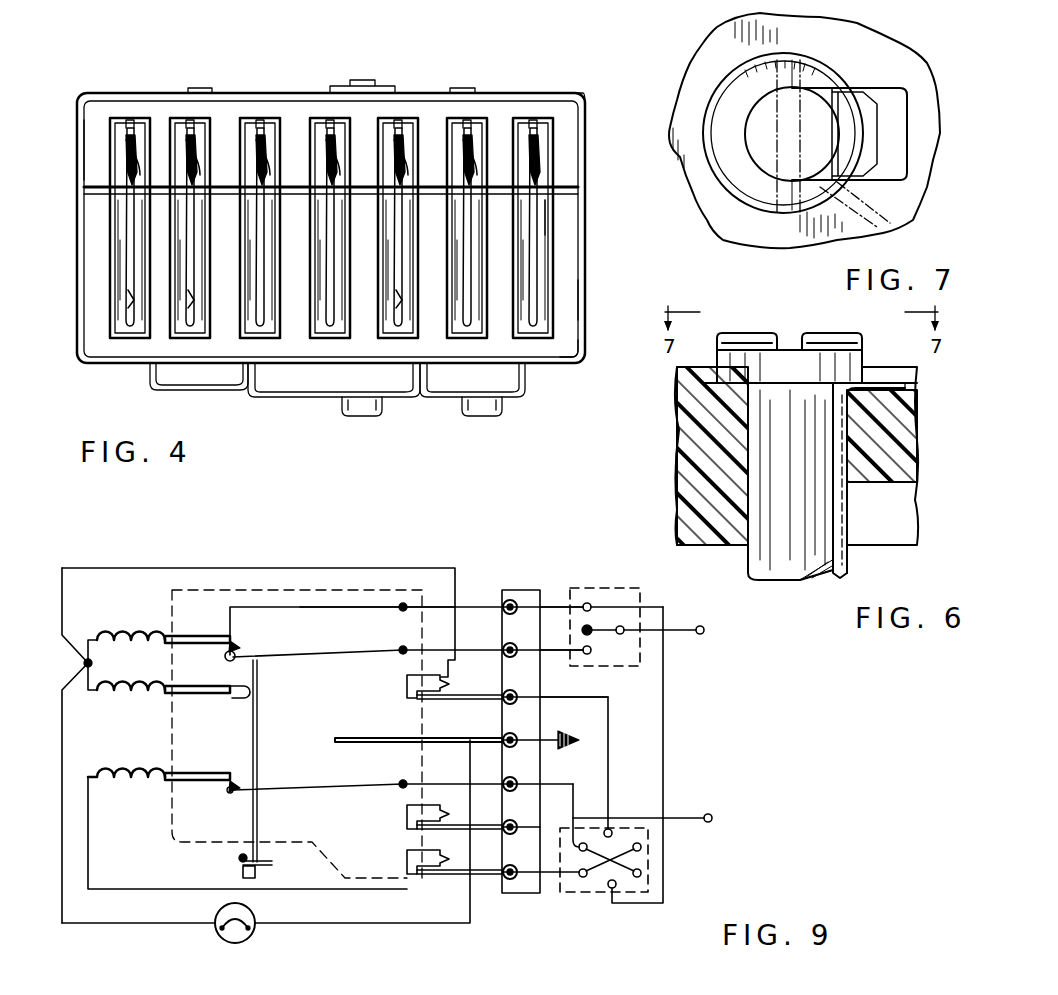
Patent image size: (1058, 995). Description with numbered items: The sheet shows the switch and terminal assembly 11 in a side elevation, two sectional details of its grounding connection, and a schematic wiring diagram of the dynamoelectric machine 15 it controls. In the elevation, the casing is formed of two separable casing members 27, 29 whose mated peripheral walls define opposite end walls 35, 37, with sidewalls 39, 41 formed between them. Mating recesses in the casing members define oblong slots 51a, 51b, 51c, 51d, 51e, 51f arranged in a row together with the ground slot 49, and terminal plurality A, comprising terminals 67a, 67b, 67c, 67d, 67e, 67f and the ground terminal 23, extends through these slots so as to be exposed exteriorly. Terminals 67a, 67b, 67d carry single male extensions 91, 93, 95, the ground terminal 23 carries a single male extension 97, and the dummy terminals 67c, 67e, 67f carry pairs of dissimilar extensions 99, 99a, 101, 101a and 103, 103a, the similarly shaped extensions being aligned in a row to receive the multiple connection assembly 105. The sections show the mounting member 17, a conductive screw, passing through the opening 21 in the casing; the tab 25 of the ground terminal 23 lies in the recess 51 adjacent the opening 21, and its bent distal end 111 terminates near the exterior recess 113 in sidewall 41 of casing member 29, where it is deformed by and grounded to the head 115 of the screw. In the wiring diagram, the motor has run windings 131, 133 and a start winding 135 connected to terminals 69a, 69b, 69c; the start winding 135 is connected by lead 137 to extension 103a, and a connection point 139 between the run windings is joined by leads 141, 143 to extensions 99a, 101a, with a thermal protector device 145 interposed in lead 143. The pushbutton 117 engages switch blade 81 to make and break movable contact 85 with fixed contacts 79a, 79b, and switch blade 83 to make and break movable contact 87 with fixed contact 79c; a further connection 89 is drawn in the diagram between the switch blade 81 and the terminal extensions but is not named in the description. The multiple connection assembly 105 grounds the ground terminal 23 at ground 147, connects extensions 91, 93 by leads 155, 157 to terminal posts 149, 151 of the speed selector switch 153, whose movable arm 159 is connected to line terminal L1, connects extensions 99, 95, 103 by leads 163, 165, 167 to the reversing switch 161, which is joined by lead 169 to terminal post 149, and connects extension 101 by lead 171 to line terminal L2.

In FIG. 4, the switch and terminal assembly 11 is at (574, 86).
In FIG. 9, the dynamoelectric machine 15 is at (102, 585).
In FIG. 6, the mounting member 17 is at (743, 328).
In FIG. 7, the opening 21 is at (753, 100).
In FIG. 6, the opening 21 is at (748, 517).
In FIG. 4, the ground terminal 23 is at (326, 150).
In FIG. 6, the ground terminal 23 is at (857, 556).
In FIG. 9, the ground terminal 23 is at (370, 740).
In FIG. 7, the tab 25 is at (838, 90).
In FIG. 6, the tab 25 is at (838, 456).
In FIG. 4, the casing member 27 is at (582, 107).
In FIG. 4, the casing member 29 is at (577, 351).
In FIG. 6, the casing member 29 is at (690, 494).
In FIG. 4, the end wall 35 is at (573, 300).
In FIG. 4, the end wall 37 is at (89, 152).
In FIG. 4, the sidewall 39 is at (333, 371).
In FIG. 6, the sidewall 41 is at (689, 395).
In FIG. 4, the ground slot 49 is at (320, 150).
In FIG. 7, the recess 51 is at (817, 207).
In FIG. 6, the recess 51 is at (848, 418).
In FIG. 4, the slot 51a is at (530, 327).
In FIG. 4, the slot 51b is at (463, 327).
In FIG. 4, the slot 51c is at (400, 327).
In FIG. 4, the slot 51d is at (262, 328).
In FIG. 4, the slot 51e is at (192, 327).
In FIG. 4, the slot 51f is at (125, 327).
In FIG. 4, the terminal 67a is at (530, 152).
In FIG. 9, the terminal 67a is at (405, 606).
In FIG. 4, the terminal 67b is at (462, 152).
In FIG. 9, the terminal 67b is at (401, 650).
In FIG. 4, the dummy terminal 67c is at (397, 152).
In FIG. 9, the dummy terminal 67c is at (411, 699).
In FIG. 4, the terminal 67d is at (258, 152).
In FIG. 9, the terminal 67d is at (401, 784).
In FIG. 4, the dummy terminal 67e is at (190, 152).
In FIG. 9, the dummy terminal 67e is at (407, 829).
In FIG. 4, the dummy terminal 67f is at (125, 152).
In FIG. 9, the dummy terminal 67f is at (413, 876).
In FIG. 9, the terminal 69a is at (200, 624).
In FIG. 9, the terminal 69b is at (190, 694).
In FIG. 9, the terminal 69c is at (180, 781).
In FIG. 9, the fixed contact 79a is at (238, 651).
In FIG. 9, the fixed contact 79b is at (240, 697).
In FIG. 9, the fixed contact 79c is at (245, 786).
In FIG. 9, the switch blade 81 is at (344, 652).
In FIG. 9, the switch blade 83 is at (345, 786).
In FIG. 9, the movable contact 85 is at (240, 656).
In FIG. 9, the movable contact 87 is at (227, 791).
In FIG. 9, the conductor 89 is at (313, 606).
In FIG. 4, the electrical connector section 91 is at (548, 157).
In FIG. 9, the electrical connector section 91 is at (455, 607).
In FIG. 4, the electrical connector section 93 is at (487, 150).
In FIG. 9, the electrical connector section 93 is at (470, 650).
In FIG. 4, the electrical connector section 95 is at (272, 148).
In FIG. 9, the electrical connector section 95 is at (470, 785).
In FIG. 4, the electrical connector section 97 is at (358, 158).
In FIG. 9, the electrical connector section 97 is at (470, 740).
In FIG. 4, the electrical connector section 99 is at (410, 152).
In FIG. 9, the electrical connector section 99 is at (470, 696).
In FIG. 4, the electrical connector section 99a is at (410, 307).
In FIG. 9, the electrical connector section 99a is at (405, 676).
In FIG. 4, the electrical connector section 101 is at (200, 150).
In FIG. 9, the electrical connector section 101 is at (478, 827).
In FIG. 4, the electrical connector section 101a is at (200, 300).
In FIG. 9, the electrical connector section 101a is at (405, 808).
In FIG. 4, the electrical connector section 103 is at (137, 150).
In FIG. 9, the electrical connector section 103 is at (487, 877).
In FIG. 4, the electrical connector section 103a is at (133, 302).
In FIG. 9, the electrical connector section 103a is at (407, 858).
In FIG. 9, the multiple connection assembly 105 is at (512, 590).
In FIG. 7, the distal end 111 is at (882, 143).
In FIG. 6, the distal end 111 is at (886, 385).
In FIG. 7, the exterior recess 113 is at (885, 85).
In FIG. 6, the exterior recess 113 is at (902, 388).
In FIG. 6, the head 115 is at (810, 332).
In FIG. 9, the pushbutton 117 is at (258, 715).
In FIG. 9, the run winding 131 is at (126, 634).
In FIG. 9, the run winding 133 is at (120, 691).
In FIG. 9, the start winding 135 is at (110, 775).
In FIG. 9, the lead 137 is at (168, 888).
In FIG. 9, the connection point 139 is at (84, 663).
In FIG. 9, the lead 141 is at (205, 567).
In FIG. 9, the lead 143 is at (148, 921).
In FIG. 9, the thermal protector device 145 is at (257, 916).
In FIG. 9, the ground 147 is at (576, 735).
In FIG. 9, the terminal post 149 is at (588, 603).
In FIG. 9, the terminal post 151 is at (593, 660).
In FIG. 9, the speed selector switch 153 is at (634, 590).
In FIG. 9, the lead 155 is at (549, 605).
In FIG. 9, the lead 157 is at (553, 658).
In FIG. 9, the movable arm 159 is at (608, 634).
In FIG. 9, the reversing switch 161 is at (589, 893).
In FIG. 9, the lead 163 is at (610, 736).
In FIG. 9, the lead 165 is at (566, 784).
In FIG. 9, the lead 167 is at (548, 877).
In FIG. 9, the lead 169 is at (665, 733).
In FIG. 9, the lead 171 is at (672, 817).
In FIG. 4, the terminal plurality A is at (548, 216).
In FIG. 9, the line terminal L1 is at (704, 630).
In FIG. 9, the line terminal L2 is at (712, 818).